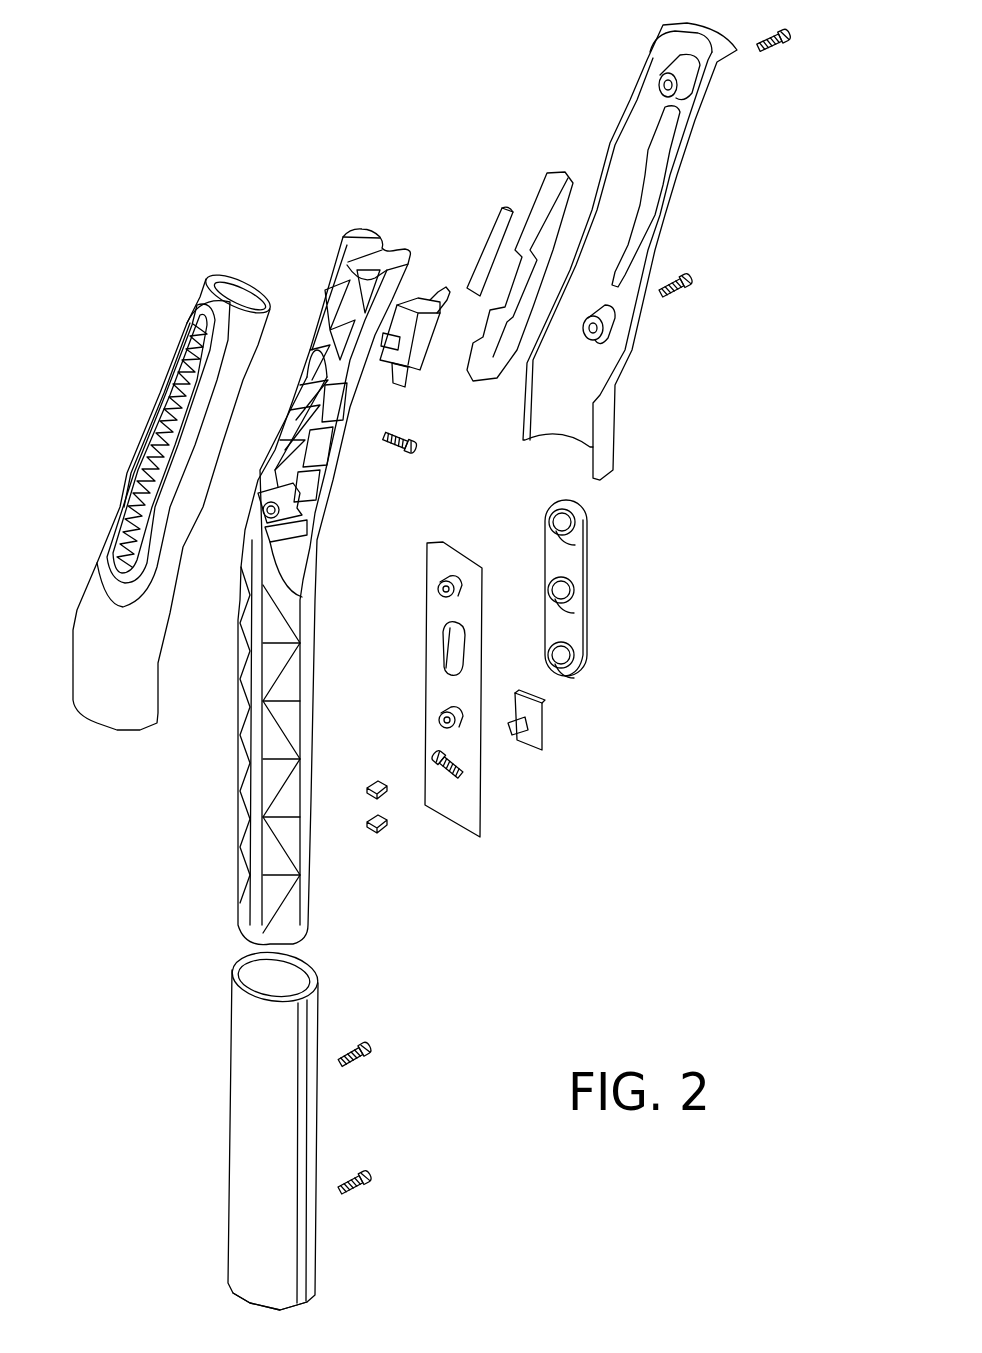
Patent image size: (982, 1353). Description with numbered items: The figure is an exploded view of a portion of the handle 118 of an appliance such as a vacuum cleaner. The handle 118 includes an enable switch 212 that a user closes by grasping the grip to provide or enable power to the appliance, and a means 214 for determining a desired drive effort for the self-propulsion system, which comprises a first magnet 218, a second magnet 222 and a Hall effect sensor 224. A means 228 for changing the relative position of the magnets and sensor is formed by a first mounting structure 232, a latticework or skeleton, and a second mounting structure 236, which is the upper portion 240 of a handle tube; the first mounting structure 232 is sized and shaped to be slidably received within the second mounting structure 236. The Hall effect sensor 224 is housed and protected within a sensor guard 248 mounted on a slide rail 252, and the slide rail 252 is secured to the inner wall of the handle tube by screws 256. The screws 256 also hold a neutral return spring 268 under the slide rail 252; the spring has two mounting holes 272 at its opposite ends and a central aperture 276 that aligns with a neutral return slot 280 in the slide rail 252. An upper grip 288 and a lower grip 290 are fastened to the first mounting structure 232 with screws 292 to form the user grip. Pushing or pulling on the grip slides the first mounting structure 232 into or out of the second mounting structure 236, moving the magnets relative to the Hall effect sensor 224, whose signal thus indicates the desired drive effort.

The handle 118 is at (162, 142).
The enable switch 212 is at (425, 290).
The means for determining a desired drive effort 214 is at (486, 860).
The first magnet 218 is at (380, 835).
The second magnet 222 is at (378, 779).
The Hall effect sensor 224 is at (528, 718).
The means for changing a relative position of the magnets and Hall effect sensor 228 is at (165, 1010).
The first mounting structure 232 is at (238, 818).
The second mounting structure 236 is at (236, 1147).
The upper portion of a handle tube 240 is at (314, 1293).
The sensor guard 248 is at (437, 772).
The slide rail 252 is at (443, 682).
The screws 256 is at (361, 1063).
The neutral return spring 268 is at (577, 517).
The mounting holes 272 is at (576, 545).
The central aperture 276 is at (562, 608).
The neutral return slot 280 is at (453, 650).
The upper grip 288 is at (197, 305).
The lower grip 290 is at (675, 172).
The screws 292 is at (772, 55).